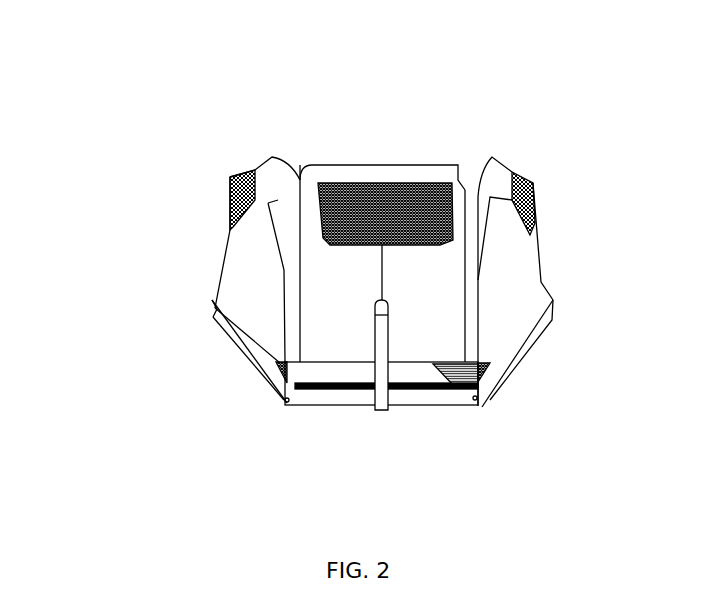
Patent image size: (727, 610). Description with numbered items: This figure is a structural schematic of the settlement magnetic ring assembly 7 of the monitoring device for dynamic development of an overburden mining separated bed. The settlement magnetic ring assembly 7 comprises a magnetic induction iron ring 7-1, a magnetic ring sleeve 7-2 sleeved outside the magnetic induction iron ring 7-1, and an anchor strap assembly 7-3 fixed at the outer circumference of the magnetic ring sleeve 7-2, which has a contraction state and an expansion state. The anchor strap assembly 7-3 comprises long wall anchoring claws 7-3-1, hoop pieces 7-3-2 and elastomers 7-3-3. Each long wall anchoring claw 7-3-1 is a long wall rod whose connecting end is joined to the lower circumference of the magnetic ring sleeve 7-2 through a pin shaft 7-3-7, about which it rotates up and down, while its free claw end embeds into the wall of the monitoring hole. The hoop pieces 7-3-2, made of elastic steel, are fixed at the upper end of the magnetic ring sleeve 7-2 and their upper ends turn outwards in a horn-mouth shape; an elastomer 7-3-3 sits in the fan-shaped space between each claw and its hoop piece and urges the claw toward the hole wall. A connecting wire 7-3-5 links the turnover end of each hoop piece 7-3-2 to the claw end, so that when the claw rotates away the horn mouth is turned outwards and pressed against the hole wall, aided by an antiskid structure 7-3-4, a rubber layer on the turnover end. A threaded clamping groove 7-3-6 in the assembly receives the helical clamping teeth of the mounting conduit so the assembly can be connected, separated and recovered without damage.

The settlement magnetic ring assembly 7 is at (381, 155).
The magnetic induction iron ring 7-1 is at (320, 385).
The magnetic ring sleeve 7-2 is at (348, 392).
The anchor strap assembly 7-3 is at (92, 258).
The long wall anchoring claw 7-3-1 is at (215, 308).
The hoop piece 7-3-2 is at (278, 200).
The elastomer 7-3-3 is at (285, 363).
The antiskid structure 7-3-4 is at (534, 185).
The connecting wire 7-3-5 is at (540, 260).
The threaded clamping groove 7-3-6 is at (471, 388).
The pin shaft 7-3-7 is at (384, 400).